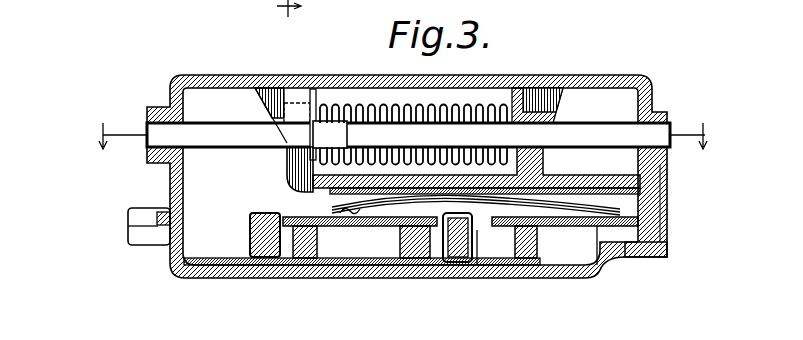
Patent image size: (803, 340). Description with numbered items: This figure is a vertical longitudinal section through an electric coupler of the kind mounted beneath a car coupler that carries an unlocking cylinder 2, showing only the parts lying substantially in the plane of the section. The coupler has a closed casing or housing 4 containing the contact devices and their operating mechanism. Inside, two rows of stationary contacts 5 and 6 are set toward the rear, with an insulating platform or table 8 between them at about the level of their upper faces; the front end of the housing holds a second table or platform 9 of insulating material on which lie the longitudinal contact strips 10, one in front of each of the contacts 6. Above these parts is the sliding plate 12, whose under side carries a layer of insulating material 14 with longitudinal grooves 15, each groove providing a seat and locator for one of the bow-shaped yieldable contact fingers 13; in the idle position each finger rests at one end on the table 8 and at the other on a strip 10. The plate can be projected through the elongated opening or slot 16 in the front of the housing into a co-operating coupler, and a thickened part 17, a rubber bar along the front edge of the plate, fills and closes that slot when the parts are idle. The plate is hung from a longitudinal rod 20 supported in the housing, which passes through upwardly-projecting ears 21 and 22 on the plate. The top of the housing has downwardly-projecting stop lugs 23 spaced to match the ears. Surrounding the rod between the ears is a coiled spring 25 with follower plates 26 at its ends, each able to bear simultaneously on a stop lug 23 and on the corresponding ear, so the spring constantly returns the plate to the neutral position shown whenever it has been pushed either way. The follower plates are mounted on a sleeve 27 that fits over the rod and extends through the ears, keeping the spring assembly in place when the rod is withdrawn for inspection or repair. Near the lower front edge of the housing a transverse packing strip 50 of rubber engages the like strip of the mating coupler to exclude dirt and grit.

The unlocking cylinder 2 is at (402, 135).
The casing or housing 4 is at (648, 86).
The stationary contacts 5 is at (255, 217).
The stationary contacts 6 is at (478, 240).
The platform or table 8 is at (397, 232).
The second table or platform 9 is at (597, 264).
The contact strips 10 is at (558, 219).
The sliding plate 12 is at (566, 178).
The contact fingers 13 is at (362, 245).
The layer of insulating material 14 is at (342, 190).
The grooves 15 is at (352, 207).
The elongated opening or slot 16 is at (667, 224).
The thickened part 17 is at (667, 204).
The rod 20 is at (218, 113).
The ears 21 is at (290, 164).
The ears 22 is at (557, 112).
The stop lugs 23 is at (288, 143).
The coiled spring 25 is at (362, 106).
The follower plates 26 is at (316, 92).
The sleeve 27 is at (380, 127).
The packing strip 50 is at (667, 245).